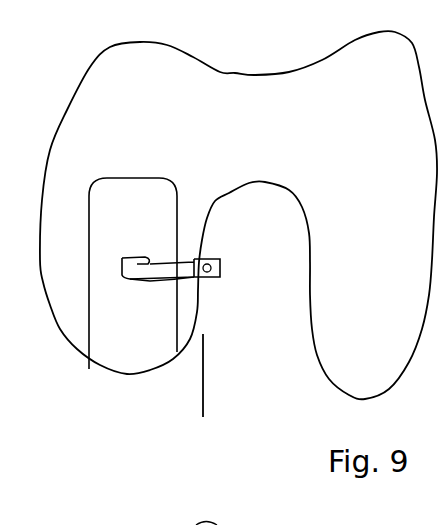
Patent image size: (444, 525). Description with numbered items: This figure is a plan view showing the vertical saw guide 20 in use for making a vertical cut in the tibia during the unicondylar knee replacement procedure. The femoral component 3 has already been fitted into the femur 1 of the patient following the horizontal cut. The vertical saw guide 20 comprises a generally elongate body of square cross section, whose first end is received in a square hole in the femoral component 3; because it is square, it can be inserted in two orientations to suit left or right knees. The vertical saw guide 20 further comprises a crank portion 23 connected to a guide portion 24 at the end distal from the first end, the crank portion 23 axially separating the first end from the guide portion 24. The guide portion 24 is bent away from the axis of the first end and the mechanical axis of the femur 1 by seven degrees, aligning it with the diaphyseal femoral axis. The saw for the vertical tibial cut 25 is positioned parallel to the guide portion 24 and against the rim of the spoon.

The femur 1 is at (47, 293).
The femoral component 3 is at (118, 375).
The vertical saw guide 20 is at (160, 260).
The crank portion 23 is at (163, 272).
The guide portion 24 is at (211, 258).
The vertical tibial cut 25 is at (203, 379).